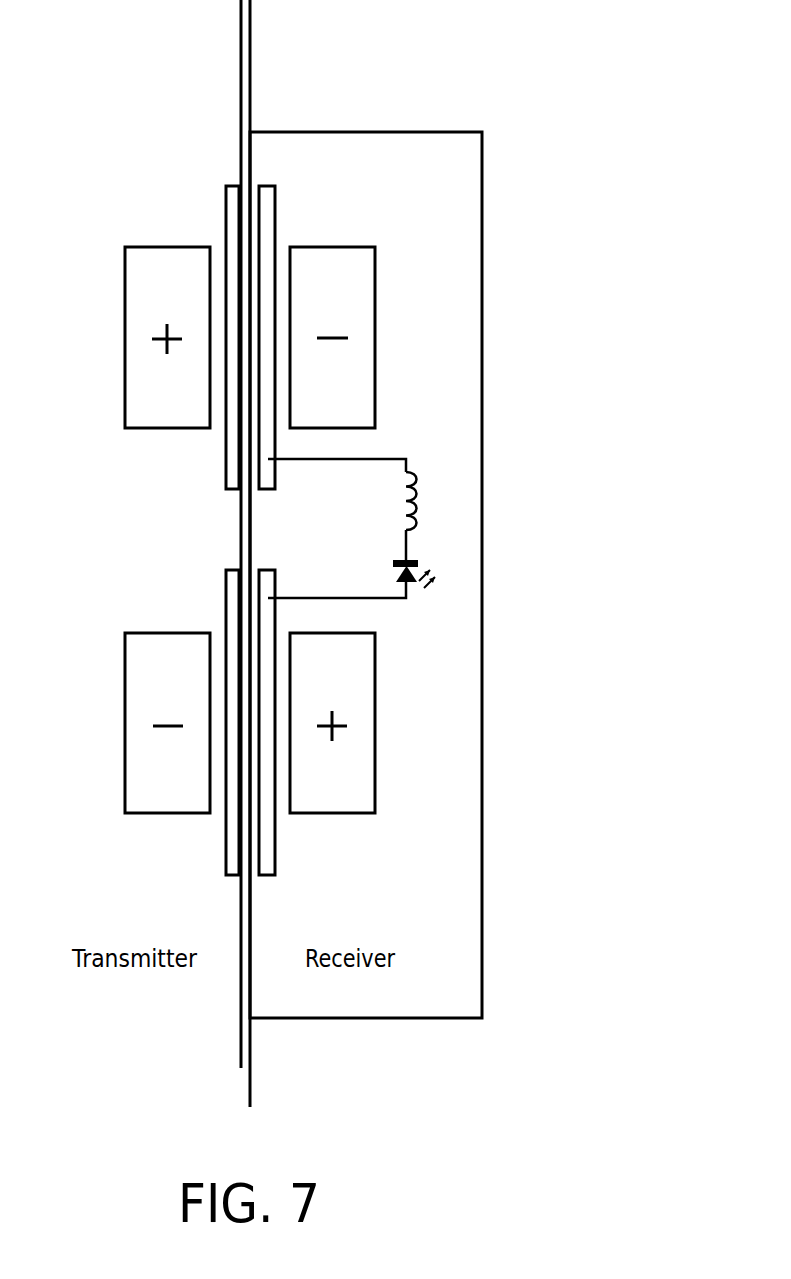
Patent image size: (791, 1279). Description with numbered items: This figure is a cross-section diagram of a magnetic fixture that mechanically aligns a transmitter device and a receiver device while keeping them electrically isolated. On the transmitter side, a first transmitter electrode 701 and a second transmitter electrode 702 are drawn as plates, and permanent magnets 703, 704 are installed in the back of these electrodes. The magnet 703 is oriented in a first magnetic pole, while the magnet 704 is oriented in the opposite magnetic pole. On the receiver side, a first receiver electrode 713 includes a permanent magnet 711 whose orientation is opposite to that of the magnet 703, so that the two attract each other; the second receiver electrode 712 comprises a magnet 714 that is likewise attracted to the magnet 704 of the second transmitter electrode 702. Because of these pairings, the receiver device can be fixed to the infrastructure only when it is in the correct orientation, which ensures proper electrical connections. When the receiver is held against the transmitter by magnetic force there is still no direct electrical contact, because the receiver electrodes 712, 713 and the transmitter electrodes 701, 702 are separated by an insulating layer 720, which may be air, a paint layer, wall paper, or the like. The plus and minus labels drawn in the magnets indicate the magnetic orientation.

The first transmitter electrode 701 is at (222, 209).
The second transmitter electrode 702 is at (225, 853).
The permanent magnet 703 is at (125, 337).
The permanent magnet 704 is at (125, 722).
The permanent magnet 711 is at (375, 338).
The second receiver electrode 712 is at (276, 853).
The first receiver electrode 713 is at (278, 209).
The magnet 714 is at (375, 723).
The insulating layer 720 is at (238, 1037).